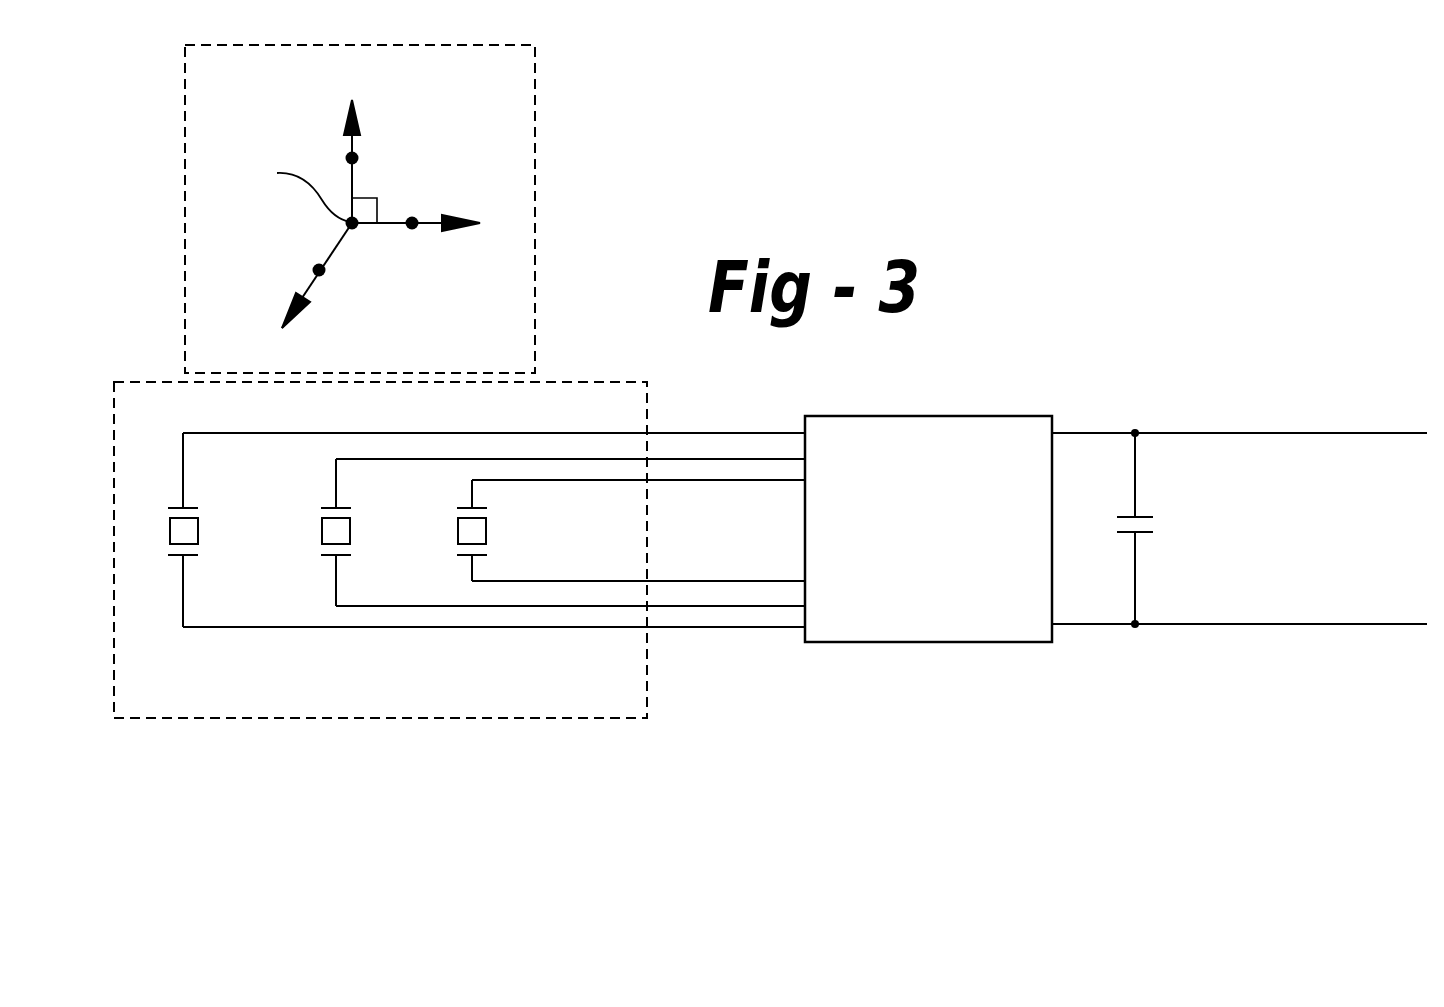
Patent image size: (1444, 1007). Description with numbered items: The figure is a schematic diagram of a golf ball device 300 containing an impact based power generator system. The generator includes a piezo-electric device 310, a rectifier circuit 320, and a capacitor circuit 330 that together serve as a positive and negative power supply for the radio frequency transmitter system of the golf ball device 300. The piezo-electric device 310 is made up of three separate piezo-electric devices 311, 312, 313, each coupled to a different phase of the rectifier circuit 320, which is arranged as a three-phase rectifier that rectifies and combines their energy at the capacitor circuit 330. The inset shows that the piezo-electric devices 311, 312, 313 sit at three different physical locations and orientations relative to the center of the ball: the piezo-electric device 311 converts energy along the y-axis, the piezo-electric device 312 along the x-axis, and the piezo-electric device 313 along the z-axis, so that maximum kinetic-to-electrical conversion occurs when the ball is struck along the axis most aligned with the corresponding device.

The golf ball device 300 is at (1255, 315).
The piezo-electric device 310 is at (459, 381).
The piezo-electric device 311 is at (486, 530).
The piezo-electric device 312 is at (563, 532).
The piezo-electric device 313 is at (631, 530).
The rectifier circuit 320 is at (928, 529).
The capacitor circuit 330 is at (1156, 528).